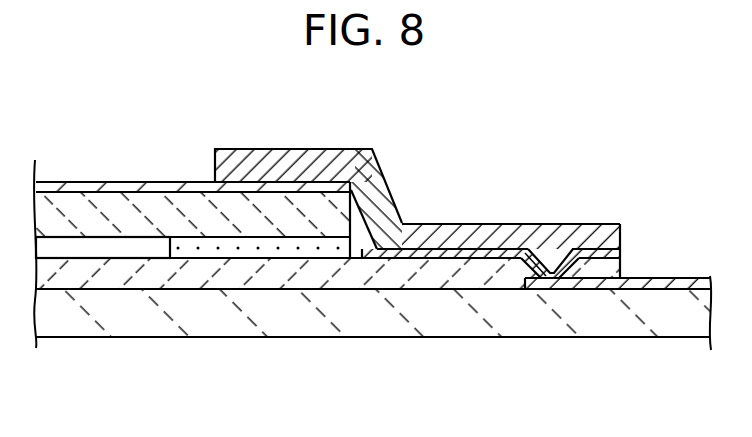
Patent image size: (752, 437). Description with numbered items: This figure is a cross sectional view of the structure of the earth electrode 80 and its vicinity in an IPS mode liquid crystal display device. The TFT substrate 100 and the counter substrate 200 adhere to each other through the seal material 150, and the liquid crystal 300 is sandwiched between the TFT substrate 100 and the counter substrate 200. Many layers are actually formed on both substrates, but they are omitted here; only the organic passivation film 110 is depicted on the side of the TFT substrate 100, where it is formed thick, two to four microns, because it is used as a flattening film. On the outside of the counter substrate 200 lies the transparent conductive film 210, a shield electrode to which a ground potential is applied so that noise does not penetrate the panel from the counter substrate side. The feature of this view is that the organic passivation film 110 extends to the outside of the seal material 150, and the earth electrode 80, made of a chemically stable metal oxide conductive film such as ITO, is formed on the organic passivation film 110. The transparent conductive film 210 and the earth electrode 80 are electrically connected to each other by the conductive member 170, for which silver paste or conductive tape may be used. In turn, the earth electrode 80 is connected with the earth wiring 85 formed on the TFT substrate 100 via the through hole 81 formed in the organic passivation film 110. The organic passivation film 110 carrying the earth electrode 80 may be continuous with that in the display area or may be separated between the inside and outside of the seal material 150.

The TFT substrate 100 is at (154, 333).
The organic passivation film 110 is at (216, 284).
The seal material 150 is at (300, 250).
The conductive member 170 is at (287, 158).
The counter substrate 200 is at (95, 206).
The transparent conductive film 210 is at (168, 183).
The liquid crystal 300 is at (90, 250).
The earth electrode 80 is at (457, 252).
The through hole 81 is at (553, 262).
The earth wiring 85 is at (658, 287).